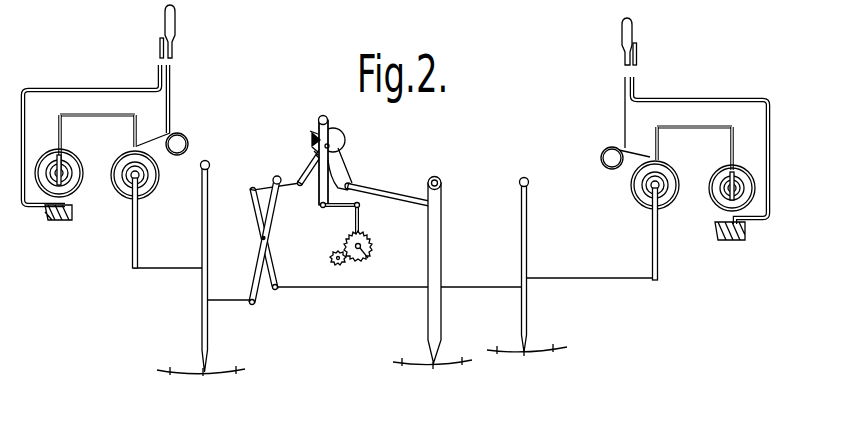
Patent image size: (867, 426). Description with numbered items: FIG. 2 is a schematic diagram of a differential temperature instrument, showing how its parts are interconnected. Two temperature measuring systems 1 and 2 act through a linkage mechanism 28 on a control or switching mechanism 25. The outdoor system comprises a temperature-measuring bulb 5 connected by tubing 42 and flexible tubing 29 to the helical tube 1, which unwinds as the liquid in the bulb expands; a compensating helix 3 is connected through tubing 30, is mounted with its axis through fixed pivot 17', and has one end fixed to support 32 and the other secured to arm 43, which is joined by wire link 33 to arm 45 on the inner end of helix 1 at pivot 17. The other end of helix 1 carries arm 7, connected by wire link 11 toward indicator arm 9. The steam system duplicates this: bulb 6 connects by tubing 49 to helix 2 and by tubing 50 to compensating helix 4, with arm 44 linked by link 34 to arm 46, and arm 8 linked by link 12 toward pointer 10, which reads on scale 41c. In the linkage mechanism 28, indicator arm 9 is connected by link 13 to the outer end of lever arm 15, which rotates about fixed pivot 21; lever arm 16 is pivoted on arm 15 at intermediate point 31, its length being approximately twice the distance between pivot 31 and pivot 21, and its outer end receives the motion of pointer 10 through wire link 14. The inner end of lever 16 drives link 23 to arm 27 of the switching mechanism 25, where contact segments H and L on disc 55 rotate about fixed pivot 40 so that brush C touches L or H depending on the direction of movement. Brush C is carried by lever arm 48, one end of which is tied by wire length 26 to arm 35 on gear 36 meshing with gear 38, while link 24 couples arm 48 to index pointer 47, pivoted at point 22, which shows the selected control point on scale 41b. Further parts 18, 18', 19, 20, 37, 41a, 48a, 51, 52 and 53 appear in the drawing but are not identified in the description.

The helical tube 1 is at (117, 192).
The helical tube 2 is at (640, 200).
The helical tube 3 is at (70, 163).
The helical tube 4 is at (716, 172).
The temperature-measuring bulb 5 is at (175, 22).
The temperature-measuring bulb 6 is at (632, 30).
The arm 7 is at (138, 250).
The arm 8 is at (658, 238).
The indicator arm 9 is at (207, 232).
The indicator arm 10 is at (527, 239).
The wire link 11 is at (172, 270).
The link 12 is at (590, 278).
The link 13 is at (229, 300).
The wire link 14 is at (484, 287).
The lever arm 15 is at (276, 221).
The lever arm 16 is at (276, 261).
The pivot 17 is at (154, 187).
The fixed pivot point 17' is at (80, 170).
The spring center 18 is at (676, 176).
The spring center 18' is at (709, 187).
The ball 19 is at (208, 158).
The ball 20 is at (520, 173).
The fixed pivot point 21 is at (275, 176).
The pivot point 22 is at (434, 172).
The link 23 is at (253, 188).
The link 24 is at (400, 190).
The control switching mechanism 25 is at (349, 136).
The wire length 26 is at (335, 208).
The arm 27 is at (302, 176).
The linkage mechanism 28 is at (280, 303).
The flexible tubing 29 is at (185, 140).
The tubing 30 is at (90, 90).
The pivot 31 is at (266, 238).
The fixed support 32 is at (60, 221).
The wire link 33 is at (104, 115).
The link 34 is at (706, 127).
The arm 35 is at (359, 221).
The gear 36 is at (371, 244).
The pointer 37 is at (369, 258).
The gear 38 is at (332, 262).
The fixed pivot 40 is at (330, 147).
The scale 41a is at (228, 400).
The scale 41b is at (412, 378).
The scale 41c is at (511, 365).
The tubing 42 is at (172, 50).
The arm 43 is at (58, 134).
The arm 44 is at (734, 146).
The arm 45 is at (133, 133).
The arm 46 is at (659, 142).
The index pointer 47 is at (441, 248).
The lever arm 48 is at (319, 190).
The lever arm 48a is at (348, 176).
The tubing 49 is at (622, 60).
The tubing 50 is at (676, 100).
The loop spring 51 is at (601, 158).
The support 52 is at (733, 240).
The link 53 is at (250, 192).
The disc 55 is at (328, 122).
The brush C is at (311, 130).
The contact segment L is at (316, 132).
The contact segment H is at (312, 145).